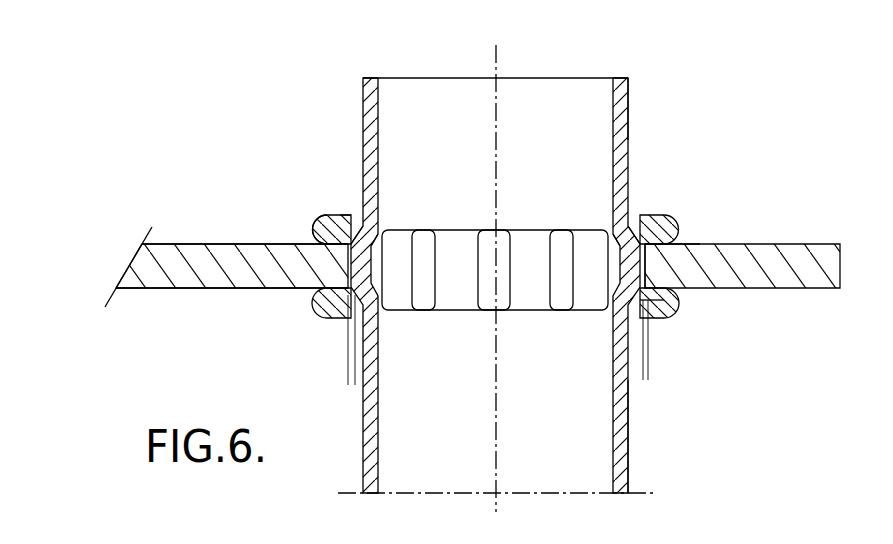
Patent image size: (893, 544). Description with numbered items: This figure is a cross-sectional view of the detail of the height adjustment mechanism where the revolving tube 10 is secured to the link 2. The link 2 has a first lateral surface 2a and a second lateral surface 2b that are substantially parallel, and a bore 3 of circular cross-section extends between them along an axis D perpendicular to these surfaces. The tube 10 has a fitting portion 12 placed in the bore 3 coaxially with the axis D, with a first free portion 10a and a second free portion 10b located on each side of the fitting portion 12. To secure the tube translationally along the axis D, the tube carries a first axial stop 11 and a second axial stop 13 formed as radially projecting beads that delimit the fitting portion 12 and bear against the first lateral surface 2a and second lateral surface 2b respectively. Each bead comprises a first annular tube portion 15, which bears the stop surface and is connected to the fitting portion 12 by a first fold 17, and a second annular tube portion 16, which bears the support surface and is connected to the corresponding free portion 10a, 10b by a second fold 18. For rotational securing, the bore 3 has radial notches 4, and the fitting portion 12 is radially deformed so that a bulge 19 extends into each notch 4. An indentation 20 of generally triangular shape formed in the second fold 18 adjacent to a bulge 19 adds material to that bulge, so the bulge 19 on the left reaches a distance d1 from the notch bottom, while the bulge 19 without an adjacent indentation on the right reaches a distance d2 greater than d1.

The link 2 is at (190, 270).
The first lateral surface 2a is at (258, 288).
The second lateral surface 2b is at (200, 244).
The bore 3 is at (647, 252).
The notch 4 is at (660, 262).
The revolving tube 10 is at (630, 129).
The first free portion 10a is at (630, 423).
The second free portion 10b is at (628, 97).
The first axial stop 11 is at (315, 308).
The fitting portion 12 is at (605, 272).
The second axial stop 13 is at (313, 227).
The first annular tube portion 15 is at (312, 234).
The second annular tube portion 16 is at (328, 220).
The first fold 17 is at (671, 215).
The second fold 18 is at (628, 205).
The bulge 19 is at (385, 237).
The indentation 20 is at (355, 230).
The axis D is at (496, 50).
The distance d1 is at (355, 368).
The distance d2 is at (643, 367).